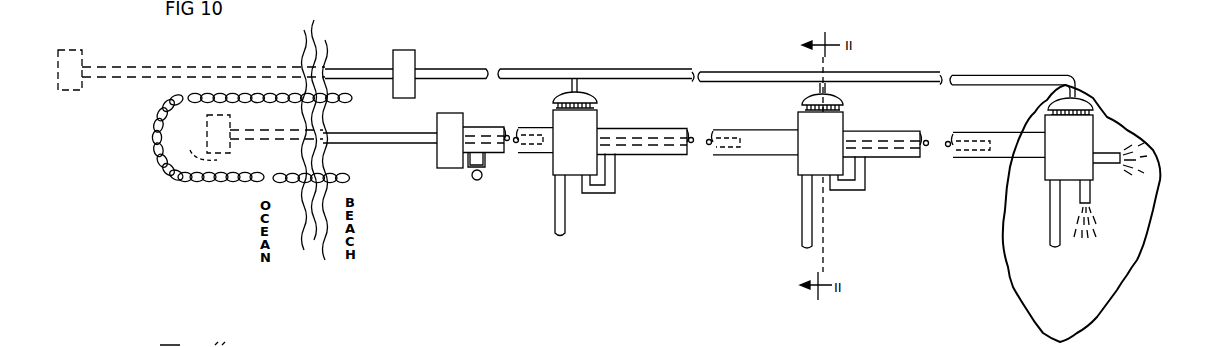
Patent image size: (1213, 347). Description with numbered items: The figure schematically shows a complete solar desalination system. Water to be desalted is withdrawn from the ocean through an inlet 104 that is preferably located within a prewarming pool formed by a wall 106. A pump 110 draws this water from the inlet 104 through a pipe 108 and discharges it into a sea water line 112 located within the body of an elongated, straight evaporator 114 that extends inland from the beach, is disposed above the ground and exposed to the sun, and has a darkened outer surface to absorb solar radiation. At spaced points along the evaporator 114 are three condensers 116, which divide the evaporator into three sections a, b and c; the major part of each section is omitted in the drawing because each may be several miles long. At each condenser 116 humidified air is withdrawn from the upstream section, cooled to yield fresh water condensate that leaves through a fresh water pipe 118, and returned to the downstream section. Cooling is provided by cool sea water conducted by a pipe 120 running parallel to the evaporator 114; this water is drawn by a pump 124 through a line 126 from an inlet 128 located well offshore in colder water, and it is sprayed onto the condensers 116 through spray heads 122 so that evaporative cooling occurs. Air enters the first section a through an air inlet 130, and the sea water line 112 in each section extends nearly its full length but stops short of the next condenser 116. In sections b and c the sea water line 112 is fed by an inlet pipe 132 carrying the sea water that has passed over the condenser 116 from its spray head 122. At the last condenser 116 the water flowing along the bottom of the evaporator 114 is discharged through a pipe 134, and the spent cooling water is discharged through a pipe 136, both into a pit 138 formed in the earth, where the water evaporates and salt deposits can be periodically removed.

The inlet 104 is at (249, 137).
The wall 106 is at (183, 181).
The pipe 108 is at (345, 133).
The pump 110 is at (445, 168).
The sea water line 112 is at (509, 135).
The evaporator 114 is at (478, 127).
The condenser 116 is at (598, 118).
The fresh water pipe 118 is at (565, 230).
The pipe 120 is at (517, 69).
The spray head 122 is at (592, 97).
The pump 124 is at (404, 50).
The line 126 is at (332, 69).
The inlet 128 is at (82, 55).
The air inlet 130 is at (480, 181).
The inlet pipe 132 is at (615, 193).
The pipe 134 is at (1107, 140).
The pipe 136 is at (1090, 195).
The pit 138 is at (1117, 283).
The evaporator section a is at (493, 153).
The evaporator section b is at (730, 155).
The evaporator section c is at (962, 157).